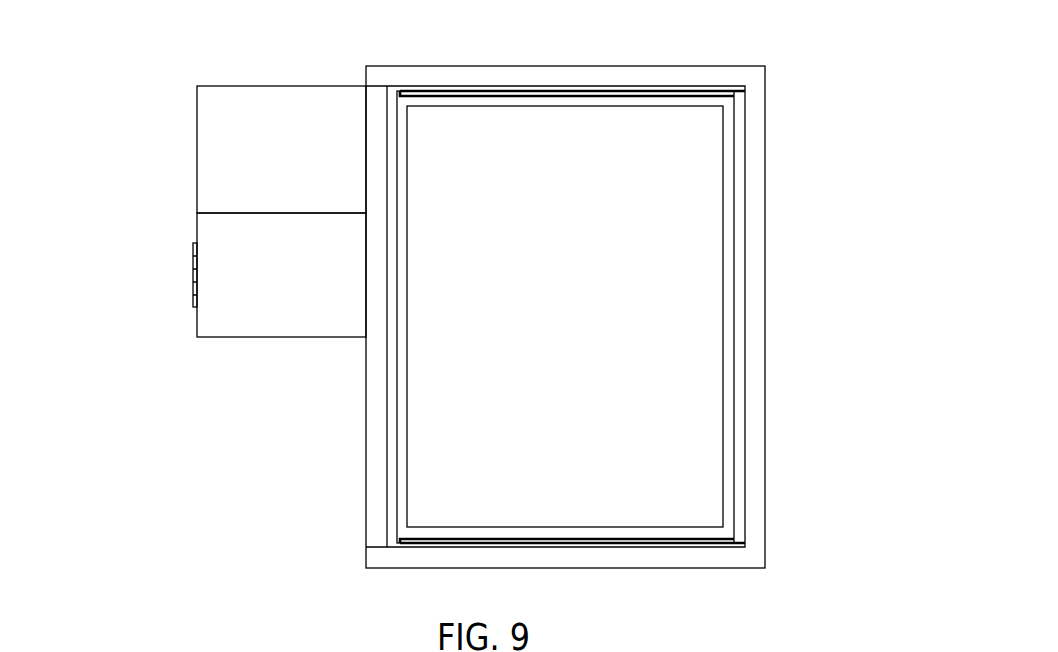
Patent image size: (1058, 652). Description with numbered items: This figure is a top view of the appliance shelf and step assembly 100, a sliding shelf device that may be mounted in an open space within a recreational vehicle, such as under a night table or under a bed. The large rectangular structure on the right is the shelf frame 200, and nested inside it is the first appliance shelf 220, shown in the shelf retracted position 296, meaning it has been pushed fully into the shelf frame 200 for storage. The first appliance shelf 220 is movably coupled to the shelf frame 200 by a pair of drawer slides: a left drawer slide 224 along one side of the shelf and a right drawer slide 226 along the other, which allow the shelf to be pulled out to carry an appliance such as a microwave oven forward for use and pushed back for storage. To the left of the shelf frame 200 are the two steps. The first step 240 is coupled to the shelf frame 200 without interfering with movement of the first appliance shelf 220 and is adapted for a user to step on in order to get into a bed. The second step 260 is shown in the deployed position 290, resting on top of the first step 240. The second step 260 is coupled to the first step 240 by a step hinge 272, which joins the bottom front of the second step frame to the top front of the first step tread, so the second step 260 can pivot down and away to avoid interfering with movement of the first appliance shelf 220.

The appliance shelf and step assembly 100 is at (111, 172).
The shelf frame 200 is at (765, 378).
The first appliance shelf 220 is at (420, 429).
The left drawer slide 224 is at (585, 98).
The right drawer slide 226 is at (633, 546).
The first step 240 is at (279, 103).
The second step 260 is at (243, 320).
The step hinge 272 is at (195, 290).
The deployed position 290 is at (162, 292).
The shelf retracted position 296 is at (776, 133).